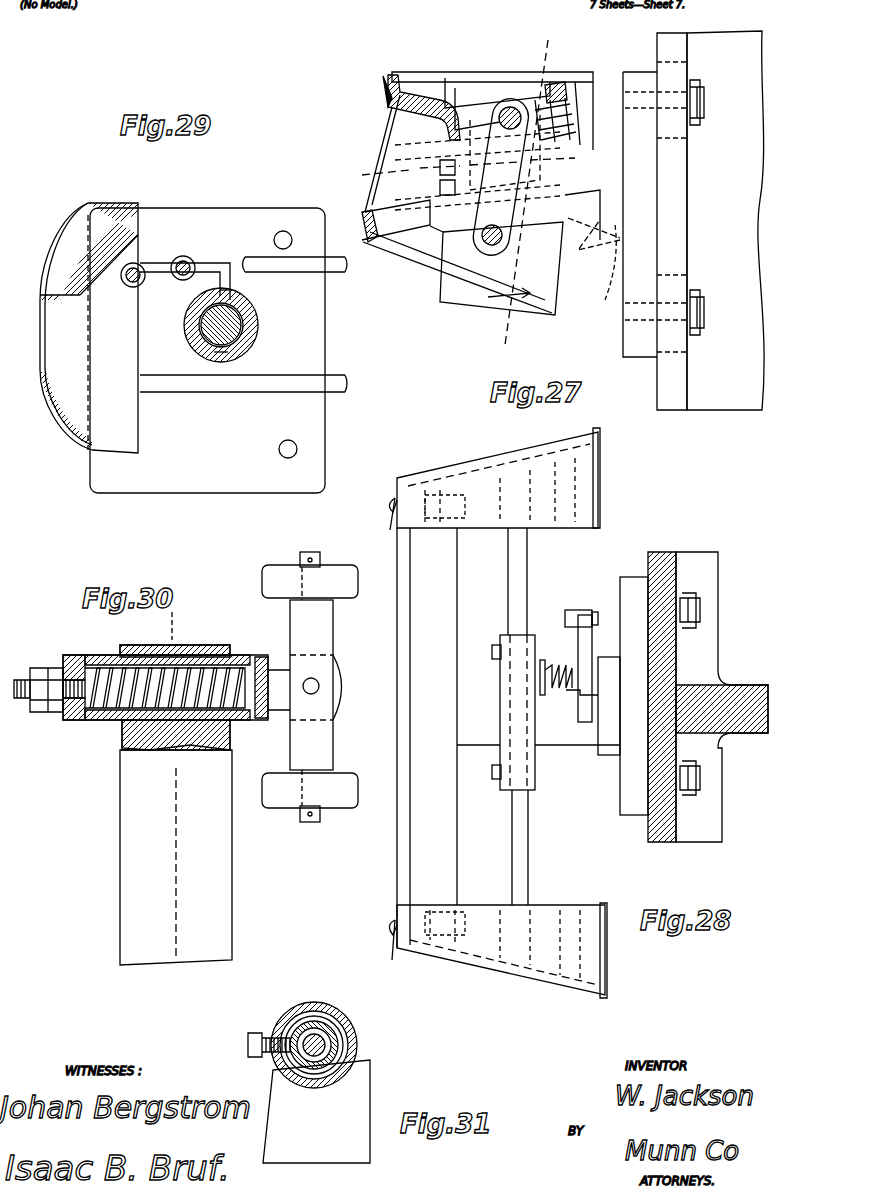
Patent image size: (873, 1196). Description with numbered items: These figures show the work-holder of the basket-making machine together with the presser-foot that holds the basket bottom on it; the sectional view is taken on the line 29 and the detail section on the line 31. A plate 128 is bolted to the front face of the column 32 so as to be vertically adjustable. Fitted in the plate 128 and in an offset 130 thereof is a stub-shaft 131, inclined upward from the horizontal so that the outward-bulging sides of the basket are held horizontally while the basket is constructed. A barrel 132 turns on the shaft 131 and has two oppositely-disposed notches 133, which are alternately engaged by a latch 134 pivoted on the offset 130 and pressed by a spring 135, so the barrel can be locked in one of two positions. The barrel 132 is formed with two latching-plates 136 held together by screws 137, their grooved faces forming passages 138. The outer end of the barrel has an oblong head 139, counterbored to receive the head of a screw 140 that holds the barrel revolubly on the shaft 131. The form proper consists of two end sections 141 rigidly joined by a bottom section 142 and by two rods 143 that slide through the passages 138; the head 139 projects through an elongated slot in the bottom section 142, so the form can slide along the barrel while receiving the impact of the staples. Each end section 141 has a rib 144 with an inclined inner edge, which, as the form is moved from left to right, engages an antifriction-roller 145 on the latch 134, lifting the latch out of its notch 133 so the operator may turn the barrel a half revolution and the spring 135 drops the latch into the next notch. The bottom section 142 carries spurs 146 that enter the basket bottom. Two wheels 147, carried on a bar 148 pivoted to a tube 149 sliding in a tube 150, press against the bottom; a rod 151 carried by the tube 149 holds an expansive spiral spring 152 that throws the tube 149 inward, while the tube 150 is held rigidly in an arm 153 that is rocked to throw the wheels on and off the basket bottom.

In FIG. 27, the section line 29 is at (526, 196).
In FIG. 30, the center line 31 is at (167, 786).
In FIG. 27, the column 32 is at (725, 220).
In FIG. 28, the column 32 is at (722, 697).
In FIG. 29, the plate 128 is at (290, 367).
In FIG. 27, the plate 128 is at (640, 214).
In FIG. 28, the plate 128 is at (634, 696).
In FIG. 27, the offset 130 is at (598, 232).
In FIG. 28, the offset 130 is at (610, 757).
In FIG. 29, the stub-shaft 131 is at (228, 325).
In FIG. 27, the stub-shaft 131 is at (607, 258).
In FIG. 29, the barrel 132 is at (252, 334).
In FIG. 27, the barrel 132 is at (513, 150).
In FIG. 28, the barrel 132 is at (500, 712).
In FIG. 29, the notches 133 is at (236, 292).
In FIG. 29, the latch 134 is at (165, 262).
In FIG. 28, the latch 134 is at (582, 620).
In FIG. 27, the spring 135 is at (550, 80).
In FIG. 28, the spring 135 is at (558, 665).
In FIG. 27, the latching-plates 136 is at (495, 105).
In FIG. 28, the latching-plates 136 is at (505, 640).
In FIG. 27, the screws 137 is at (462, 245).
In FIG. 28, the screws 137 is at (492, 650).
In FIG. 27, the passages 138 is at (508, 105).
In FIG. 28, the passages 138 is at (530, 765).
In FIG. 27, the head 139 is at (395, 160).
In FIG. 27, the screw 140 is at (380, 172).
In FIG. 29, the end sections 141 is at (128, 288).
In FIG. 27, the end sections 141 is at (450, 82).
In FIG. 28, the end sections 141 is at (460, 505).
In FIG. 27, the bottom section 142 is at (415, 95).
In FIG. 28, the bottom section 142 is at (508, 738).
In FIG. 29, the rods 143 is at (332, 258).
In FIG. 27, the rods 143 is at (520, 110).
In FIG. 28, the rods 143 is at (518, 850).
In FIG. 29, the rib 144 is at (89, 328).
In FIG. 27, the rib 144 is at (577, 90).
In FIG. 28, the rib 144 is at (590, 490).
In FIG. 29, the antifriction-roller 145 is at (133, 290).
In FIG. 27, the spurs 146 is at (375, 262).
In FIG. 28, the spurs 146 is at (387, 735).
In FIG. 30, the wheels 147 is at (310, 687).
In FIG. 30, the bar 148 is at (316, 685).
In FIG. 30, the tube 149 is at (258, 662).
In FIG. 31, the tube 149 is at (358, 1045).
In FIG. 30, the tube 150 is at (98, 665).
In FIG. 31, the tube 150 is at (328, 1018).
In FIG. 30, the rod 151 is at (215, 665).
In FIG. 31, the rod 151 is at (340, 1042).
In FIG. 30, the expansive spiral spring 152 is at (105, 712).
In FIG. 31, the expansive spiral spring 152 is at (335, 1030).
In FIG. 30, the arm 153 is at (176, 842).
In FIG. 31, the arm 153 is at (316, 1111).